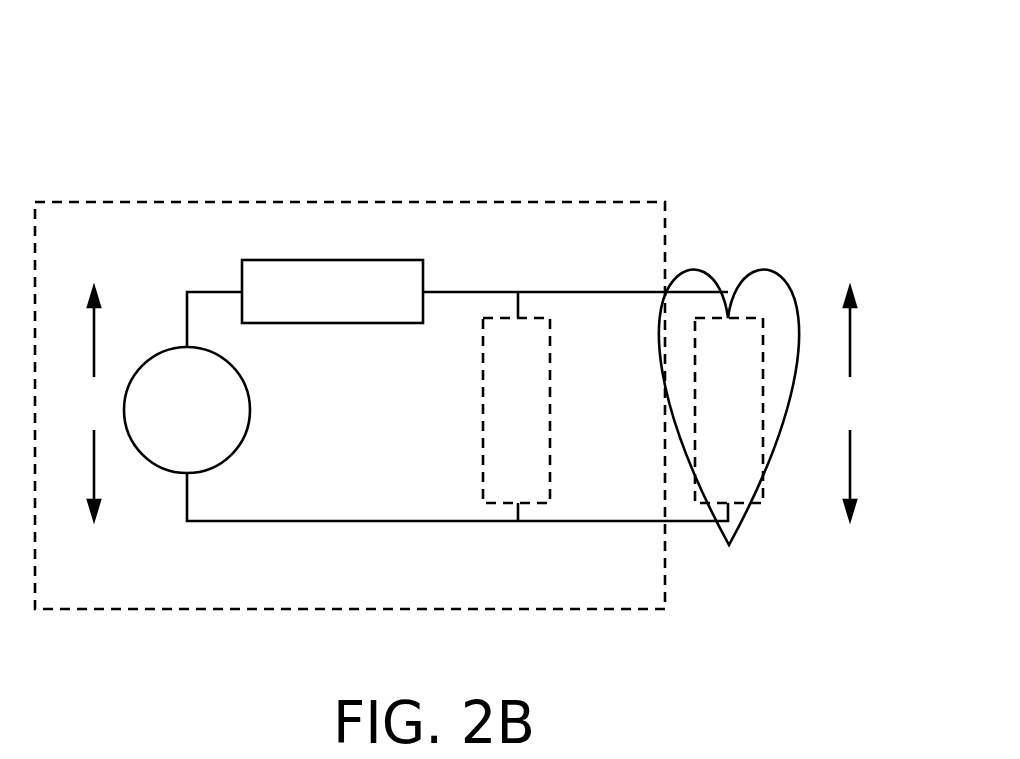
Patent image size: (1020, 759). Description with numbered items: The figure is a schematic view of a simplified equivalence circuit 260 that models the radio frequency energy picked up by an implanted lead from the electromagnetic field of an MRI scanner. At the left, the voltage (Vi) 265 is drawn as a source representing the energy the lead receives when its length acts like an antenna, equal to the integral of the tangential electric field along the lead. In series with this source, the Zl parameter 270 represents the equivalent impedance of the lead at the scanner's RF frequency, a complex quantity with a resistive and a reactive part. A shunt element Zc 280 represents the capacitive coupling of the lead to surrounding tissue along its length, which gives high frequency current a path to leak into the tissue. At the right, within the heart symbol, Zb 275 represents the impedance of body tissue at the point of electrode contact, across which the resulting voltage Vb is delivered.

The simplified equivalence circuit 260 is at (409, 115).
The voltage (Vi) 265 is at (217, 465).
The Zl parameter 270 is at (293, 260).
The Zb 275 is at (763, 479).
The Zc 280 is at (550, 343).